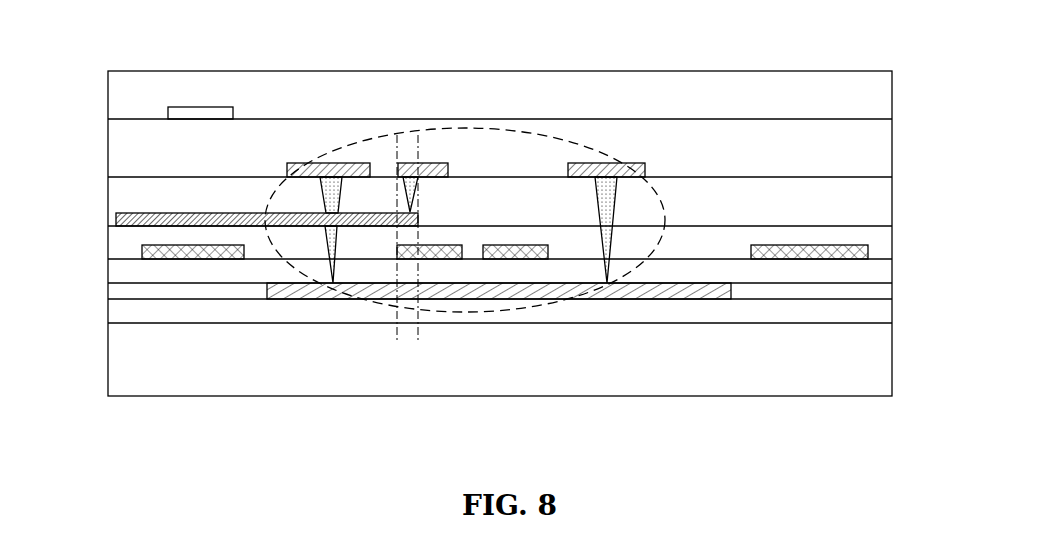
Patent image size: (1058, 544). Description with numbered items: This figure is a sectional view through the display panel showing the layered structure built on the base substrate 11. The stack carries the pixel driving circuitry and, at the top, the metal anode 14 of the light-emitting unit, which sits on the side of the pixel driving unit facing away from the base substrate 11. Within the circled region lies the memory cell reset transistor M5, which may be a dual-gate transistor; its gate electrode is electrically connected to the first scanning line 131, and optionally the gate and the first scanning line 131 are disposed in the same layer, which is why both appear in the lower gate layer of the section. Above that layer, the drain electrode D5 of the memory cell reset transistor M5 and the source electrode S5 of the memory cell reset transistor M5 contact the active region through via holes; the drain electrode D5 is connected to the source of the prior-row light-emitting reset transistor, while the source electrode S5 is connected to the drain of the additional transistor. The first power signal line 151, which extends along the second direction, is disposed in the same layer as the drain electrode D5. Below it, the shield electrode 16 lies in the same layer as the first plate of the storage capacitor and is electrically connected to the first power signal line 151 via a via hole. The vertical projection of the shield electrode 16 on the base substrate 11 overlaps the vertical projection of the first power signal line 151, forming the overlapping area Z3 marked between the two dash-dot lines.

The base substrate 11 is at (892, 363).
The metal anode 14 is at (198, 107).
The shield electrode 16 is at (116, 215).
The first power signal line 151 is at (428, 163).
The first scanning line 131 is at (452, 247).
The drain electrode of memory cell reset transistor D5 is at (297, 168).
The source electrode of memory cell reset transistor S5 is at (625, 167).
The memory cell reset transistor M5 is at (537, 135).
The overlapping area Z3 is at (432, 340).